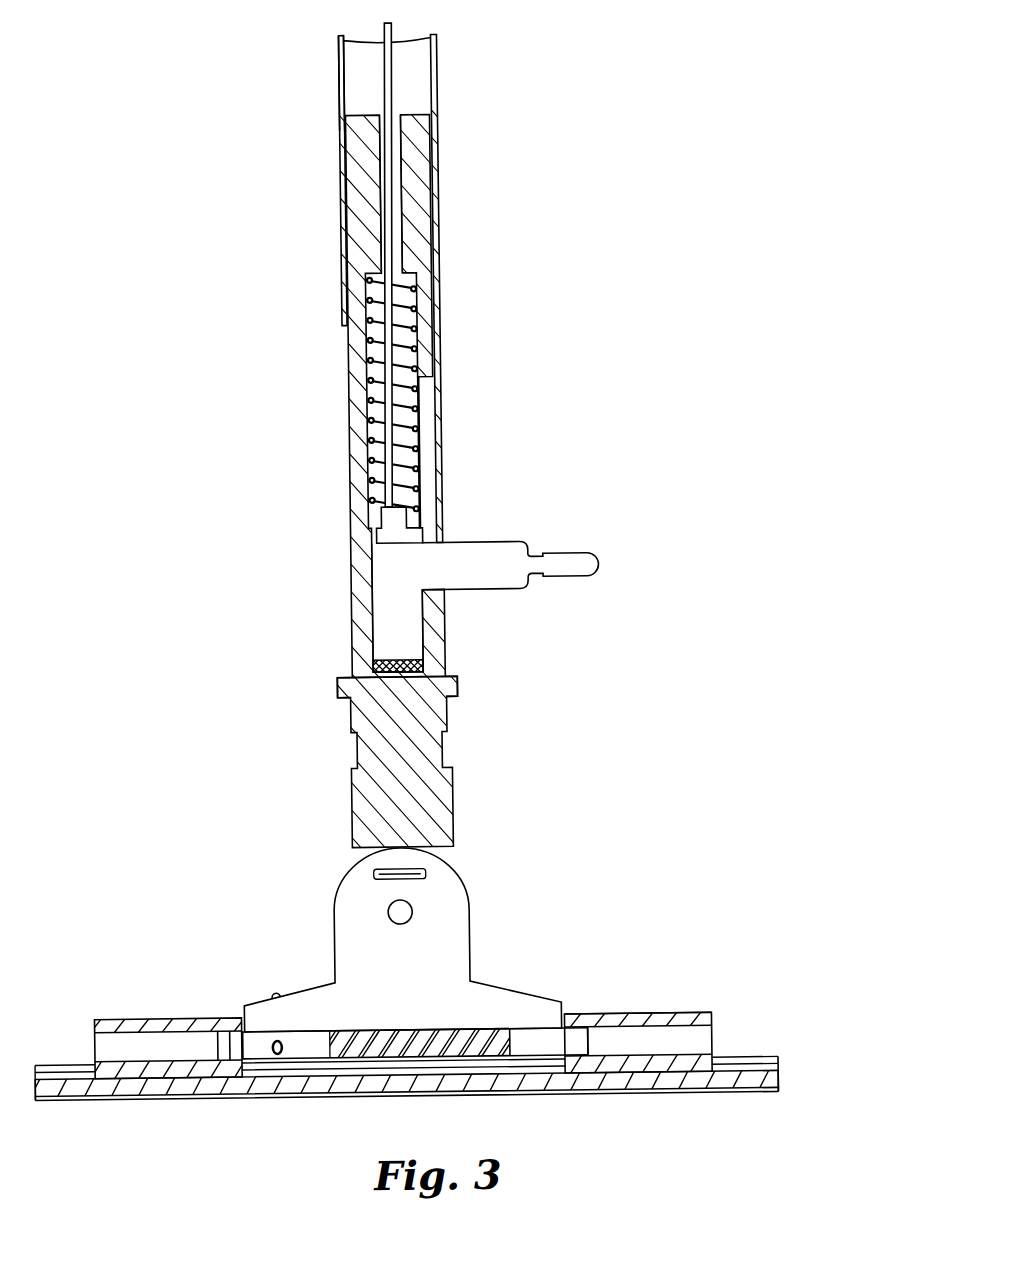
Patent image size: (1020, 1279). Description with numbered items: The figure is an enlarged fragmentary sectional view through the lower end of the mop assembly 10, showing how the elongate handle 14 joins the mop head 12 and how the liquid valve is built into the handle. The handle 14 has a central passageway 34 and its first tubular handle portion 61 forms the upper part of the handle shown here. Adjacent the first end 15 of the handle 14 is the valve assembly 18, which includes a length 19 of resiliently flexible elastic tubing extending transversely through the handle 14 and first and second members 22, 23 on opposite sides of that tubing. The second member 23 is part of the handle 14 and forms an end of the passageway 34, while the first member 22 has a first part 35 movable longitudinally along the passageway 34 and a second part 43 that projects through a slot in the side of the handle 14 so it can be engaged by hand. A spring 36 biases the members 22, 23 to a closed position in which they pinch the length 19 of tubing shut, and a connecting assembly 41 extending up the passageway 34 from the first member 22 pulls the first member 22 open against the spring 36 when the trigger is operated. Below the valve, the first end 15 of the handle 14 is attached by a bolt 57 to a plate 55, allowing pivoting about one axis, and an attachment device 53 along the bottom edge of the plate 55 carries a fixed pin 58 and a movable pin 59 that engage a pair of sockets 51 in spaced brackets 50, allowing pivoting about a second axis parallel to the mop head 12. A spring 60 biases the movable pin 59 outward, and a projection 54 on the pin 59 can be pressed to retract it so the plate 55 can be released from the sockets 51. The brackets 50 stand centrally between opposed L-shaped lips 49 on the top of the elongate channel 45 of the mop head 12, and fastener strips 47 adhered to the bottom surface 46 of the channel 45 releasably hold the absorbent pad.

The mop assembly 10 is at (584, 231).
The mop head 12 is at (590, 1007).
The elongate handle 14 is at (447, 241).
The first end 15 is at (453, 786).
The valve assembly 18 is at (439, 545).
The length of tubing 19 is at (399, 668).
The first member 22 is at (391, 586).
The second member 23 is at (416, 680).
The central passageway 34 is at (430, 96).
The first part 35 is at (388, 640).
The spring 36 is at (386, 383).
The connecting assembly 41 is at (410, 67).
The second part 43 is at (511, 584).
The elongate channel 45 is at (668, 1088).
The bottom surface 46 is at (506, 1069).
The fastener strips 47 is at (114, 1094).
The L-shaped lips 49 is at (764, 1059).
The brackets 50 is at (196, 1020).
The sockets 51 is at (99, 1041).
The attachment device 53 is at (518, 1028).
The projection 54 is at (277, 992).
The plate 55 is at (417, 974).
The bolt 57 is at (406, 910).
The fixed pin 58 is at (551, 1039).
The movable pin 59 is at (224, 1048).
The spring 60 is at (432, 1040).
The first tubular handle portion 61 is at (353, 98).